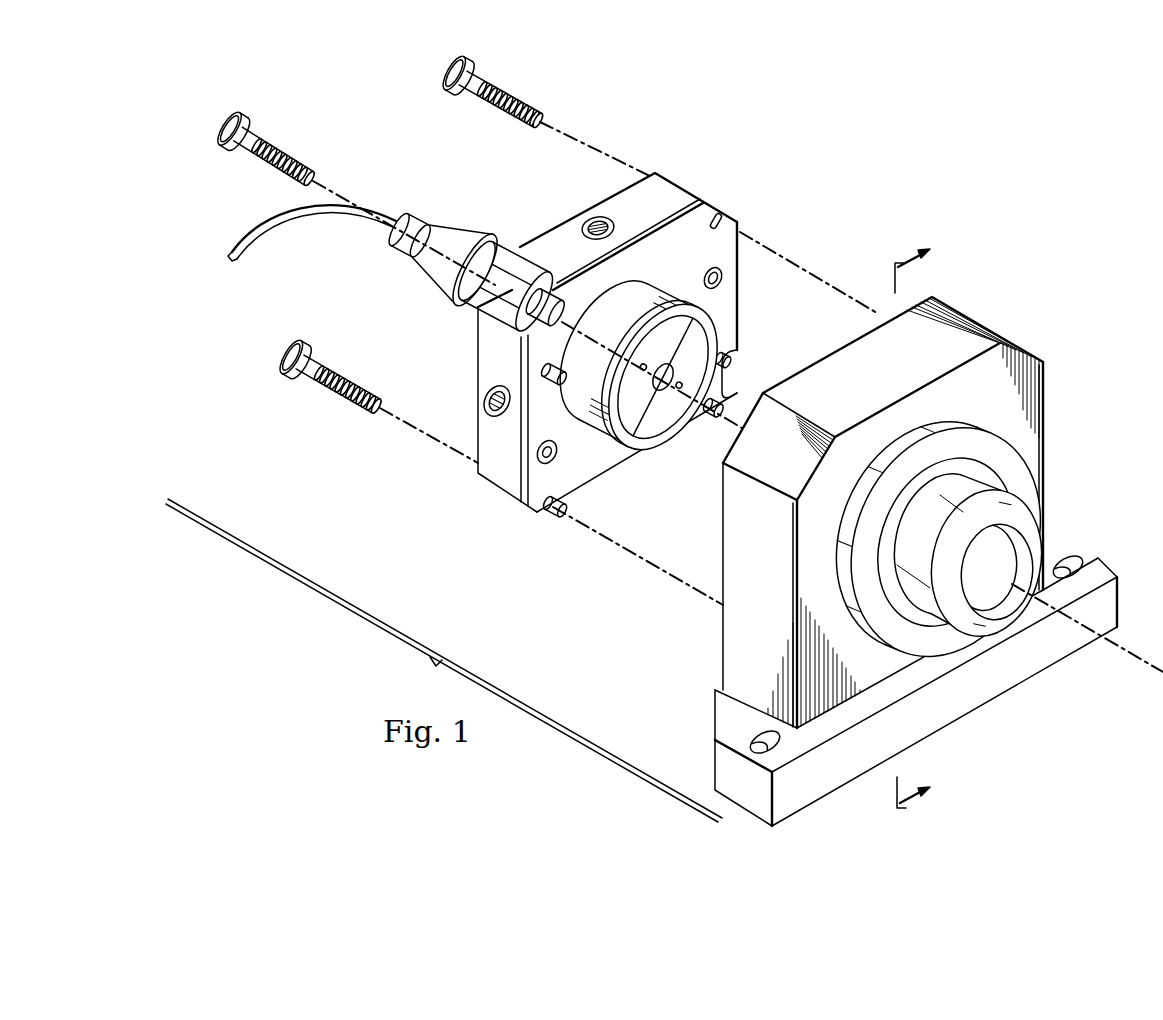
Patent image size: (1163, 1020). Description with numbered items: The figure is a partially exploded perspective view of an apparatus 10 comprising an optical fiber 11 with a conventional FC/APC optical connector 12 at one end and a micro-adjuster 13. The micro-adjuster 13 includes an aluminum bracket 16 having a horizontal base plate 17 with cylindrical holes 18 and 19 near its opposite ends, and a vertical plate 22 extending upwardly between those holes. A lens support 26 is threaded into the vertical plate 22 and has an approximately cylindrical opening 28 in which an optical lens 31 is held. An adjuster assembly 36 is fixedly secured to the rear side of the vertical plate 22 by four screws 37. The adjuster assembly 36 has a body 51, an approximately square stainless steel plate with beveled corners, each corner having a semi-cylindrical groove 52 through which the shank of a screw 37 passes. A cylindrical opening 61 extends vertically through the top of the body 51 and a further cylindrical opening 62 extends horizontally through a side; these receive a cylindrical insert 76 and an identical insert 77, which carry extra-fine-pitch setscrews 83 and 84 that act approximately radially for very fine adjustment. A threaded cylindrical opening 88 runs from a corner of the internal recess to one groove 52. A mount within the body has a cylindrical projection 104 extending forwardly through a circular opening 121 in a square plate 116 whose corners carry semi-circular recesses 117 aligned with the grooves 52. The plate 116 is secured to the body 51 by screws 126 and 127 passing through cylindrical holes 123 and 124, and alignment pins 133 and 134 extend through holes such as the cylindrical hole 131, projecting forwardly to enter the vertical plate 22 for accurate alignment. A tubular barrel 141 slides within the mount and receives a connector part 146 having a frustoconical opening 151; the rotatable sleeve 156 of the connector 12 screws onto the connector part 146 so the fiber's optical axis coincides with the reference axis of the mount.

The apparatus 10 is at (664, 439).
The optical fiber 11 is at (264, 230).
The optical connector 12 is at (475, 271).
The micro-adjuster 13 is at (444, 660).
The bracket 16 is at (910, 544).
The base plate 17 is at (932, 678).
The hole 18 is at (757, 735).
The hole 19 is at (1073, 560).
The vertical plate 22 is at (730, 650).
The lens support 26 is at (953, 535).
The opening 28 is at (984, 602).
The optical lens 31 is at (1028, 536).
The adjuster assembly 36 is at (615, 345).
The screw 37 is at (443, 81).
The body 51 is at (628, 214).
The semi-cylindrical groove 52 is at (544, 509).
The cylindrical opening 61 is at (487, 401).
The cylindrical opening 62 is at (582, 226).
The cylindrical insert 76 is at (490, 414).
The insert 77 is at (612, 226).
The setscrew 83 is at (483, 402).
The setscrew 84 is at (600, 220).
The threaded cylindrical opening 88 is at (546, 292).
The cylindrical projection 104 is at (639, 388).
The square plate 116 is at (732, 392).
The semi-circular recess 117 is at (566, 505).
The circular opening 121 is at (576, 446).
The cylindrical hole 123 is at (538, 452).
The cylindrical hole 124 is at (705, 268).
The screw 126 is at (580, 452).
The screw 127 is at (724, 278).
The cylindrical hole 131 is at (540, 370).
The alignment pin 133 is at (552, 364).
The alignment pin 134 is at (728, 352).
The tubular barrel 141 is at (659, 398).
The connector part 146 is at (666, 379).
The frustoconical opening 151 is at (673, 378).
The rotatable sleeve 156 is at (468, 320).